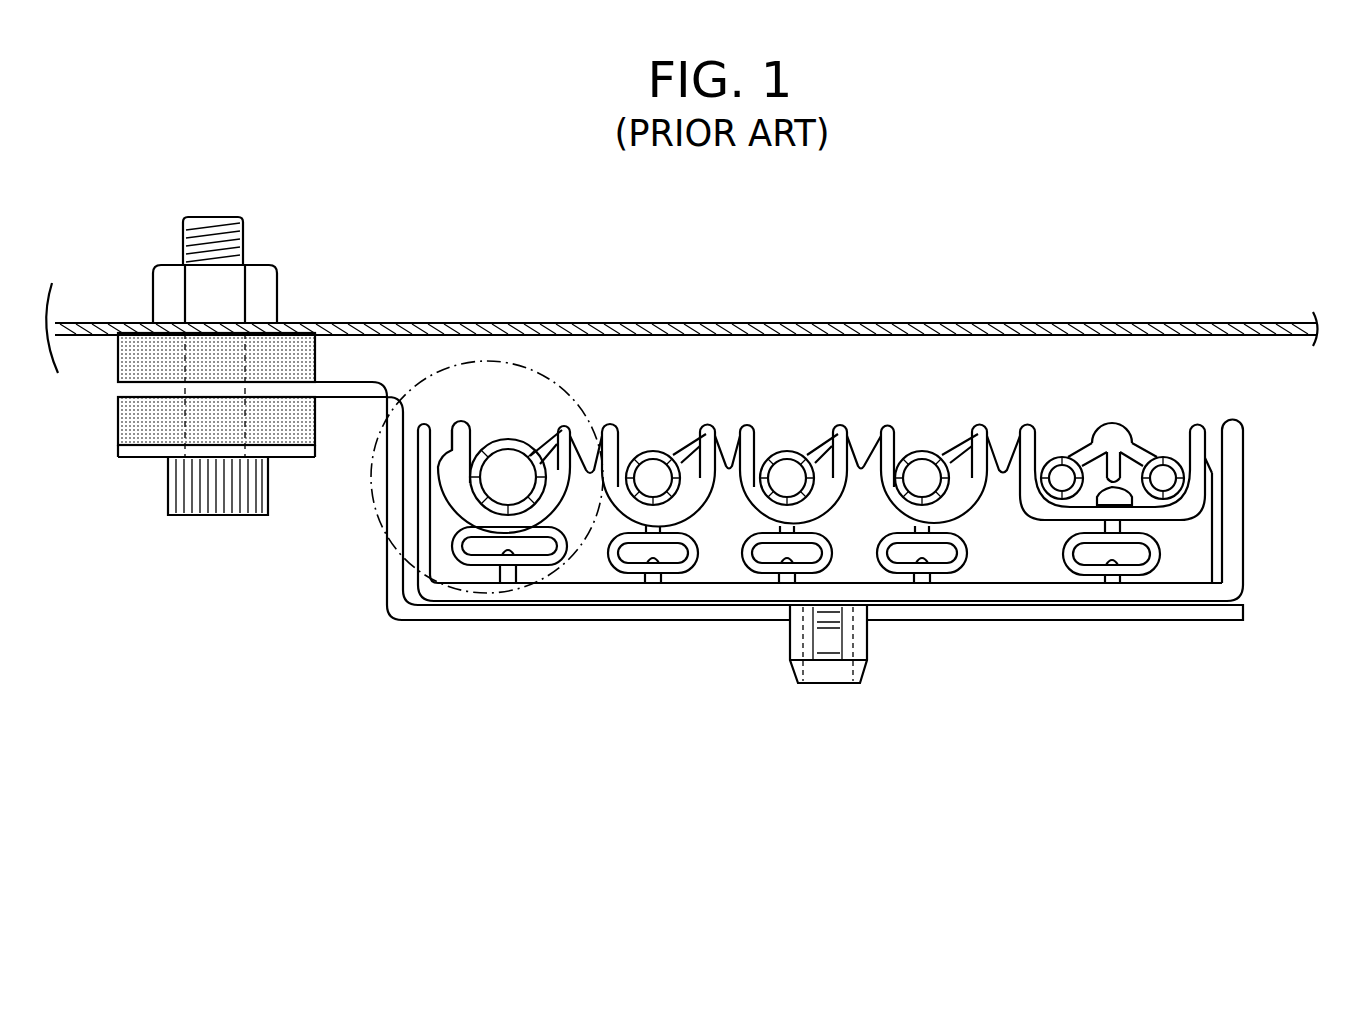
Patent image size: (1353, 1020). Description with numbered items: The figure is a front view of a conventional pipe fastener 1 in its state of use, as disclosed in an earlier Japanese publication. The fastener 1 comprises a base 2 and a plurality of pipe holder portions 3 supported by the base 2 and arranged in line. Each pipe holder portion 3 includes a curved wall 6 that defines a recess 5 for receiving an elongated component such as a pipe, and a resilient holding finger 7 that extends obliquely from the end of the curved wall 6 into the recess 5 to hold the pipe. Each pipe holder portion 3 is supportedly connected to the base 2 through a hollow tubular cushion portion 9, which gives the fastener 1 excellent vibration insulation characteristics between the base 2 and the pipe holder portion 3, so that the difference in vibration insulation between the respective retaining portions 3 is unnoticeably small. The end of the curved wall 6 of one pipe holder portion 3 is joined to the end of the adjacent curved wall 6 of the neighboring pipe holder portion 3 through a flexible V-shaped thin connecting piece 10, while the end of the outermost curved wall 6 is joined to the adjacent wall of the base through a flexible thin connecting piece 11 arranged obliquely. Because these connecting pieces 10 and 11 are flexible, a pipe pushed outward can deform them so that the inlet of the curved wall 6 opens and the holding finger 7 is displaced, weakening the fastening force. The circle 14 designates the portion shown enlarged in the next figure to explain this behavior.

The fastener 1 is at (1286, 483).
The base 2 is at (1153, 612).
The pipe holder portion 3 is at (791, 504).
The recess 5 is at (483, 514).
The curved wall 6 is at (456, 433).
The resilient holding finger 7 is at (680, 432).
The hollow tubular cushion portion 9 is at (535, 556).
The V-shaped thin connecting piece 10 is at (586, 458).
The thin connecting piece 11 is at (446, 455).
The circle 14 is at (380, 503).